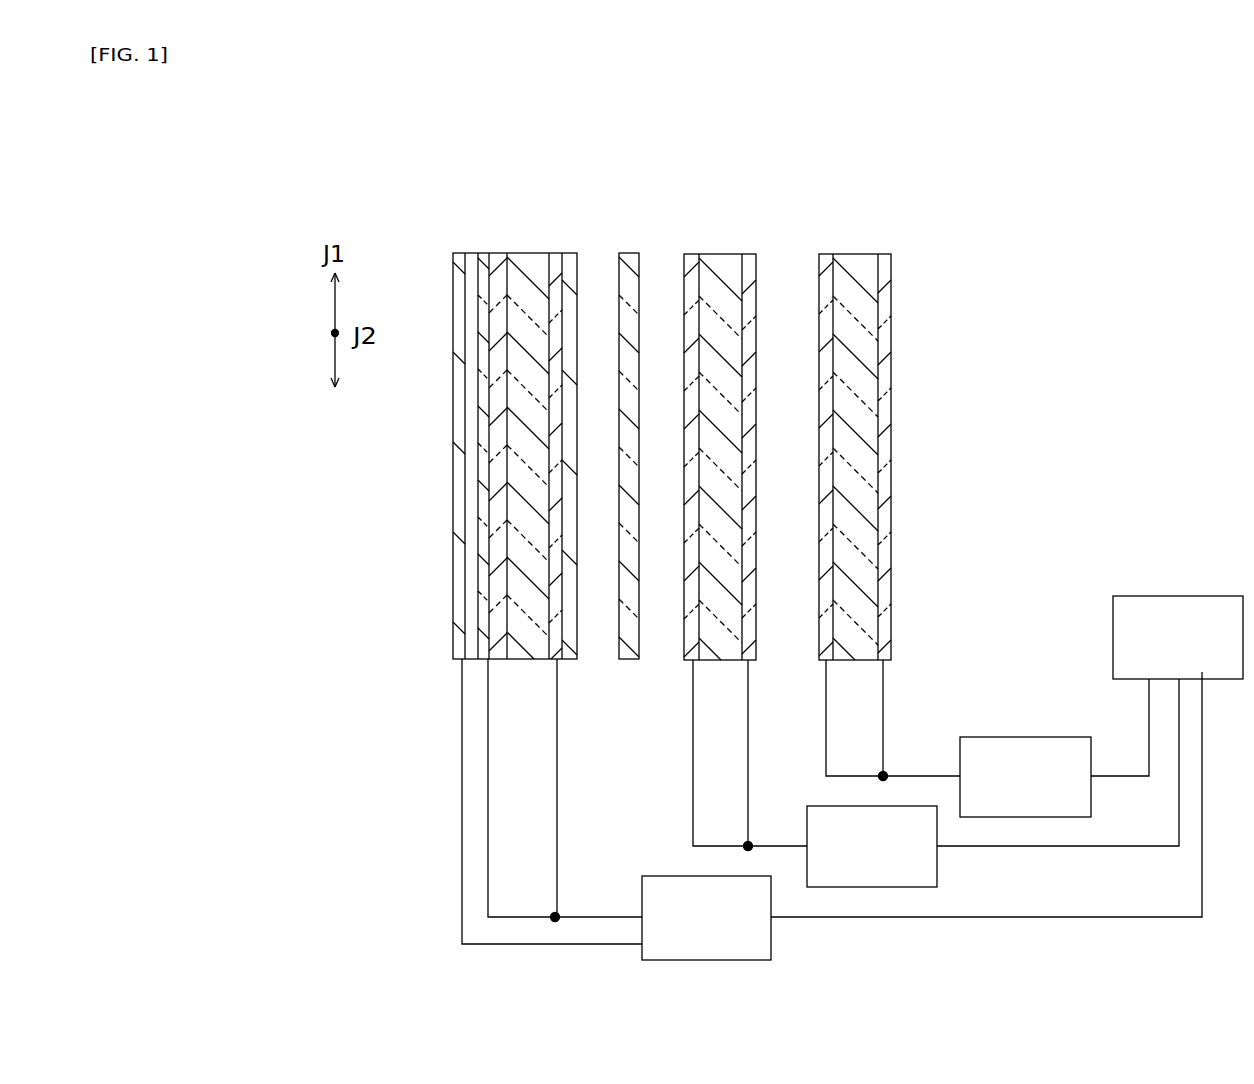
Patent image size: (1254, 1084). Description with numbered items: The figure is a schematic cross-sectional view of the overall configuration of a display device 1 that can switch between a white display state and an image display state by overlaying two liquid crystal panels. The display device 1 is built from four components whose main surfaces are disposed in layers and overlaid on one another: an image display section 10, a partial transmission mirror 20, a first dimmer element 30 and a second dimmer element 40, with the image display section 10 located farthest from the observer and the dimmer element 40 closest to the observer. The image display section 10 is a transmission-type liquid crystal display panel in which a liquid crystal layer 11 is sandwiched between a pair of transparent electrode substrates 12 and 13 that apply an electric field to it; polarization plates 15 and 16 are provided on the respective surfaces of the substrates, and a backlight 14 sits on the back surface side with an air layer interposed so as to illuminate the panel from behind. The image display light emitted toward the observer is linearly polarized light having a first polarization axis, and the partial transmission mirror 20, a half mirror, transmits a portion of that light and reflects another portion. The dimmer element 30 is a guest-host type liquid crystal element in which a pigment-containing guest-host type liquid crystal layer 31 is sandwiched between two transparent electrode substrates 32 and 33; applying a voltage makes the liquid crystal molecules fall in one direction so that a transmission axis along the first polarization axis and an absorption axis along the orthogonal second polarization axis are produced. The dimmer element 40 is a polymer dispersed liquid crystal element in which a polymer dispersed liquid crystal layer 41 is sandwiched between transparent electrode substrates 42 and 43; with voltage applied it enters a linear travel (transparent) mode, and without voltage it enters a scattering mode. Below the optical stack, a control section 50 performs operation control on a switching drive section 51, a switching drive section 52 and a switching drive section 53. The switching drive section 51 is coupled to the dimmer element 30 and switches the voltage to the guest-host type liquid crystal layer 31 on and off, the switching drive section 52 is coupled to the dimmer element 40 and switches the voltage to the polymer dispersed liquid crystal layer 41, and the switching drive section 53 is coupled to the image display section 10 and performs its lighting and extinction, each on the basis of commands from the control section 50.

The display device 1 is at (1058, 238).
The image display section 10 is at (407, 174).
The liquid crystal layer 11 is at (530, 255).
The transparent electrode substrate 12 is at (500, 255).
The transparent electrode substrate 13 is at (557, 255).
The backlight 14 is at (458, 255).
The polarization plate 15 is at (572, 255).
The polarization plate 16 is at (483, 255).
The partial transmission mirror 20 is at (632, 527).
The first dimmer element 30 is at (760, 179).
The guest-host type liquid crystal layer 31 is at (722, 254).
The transparent electrode substrate 32 is at (690, 254).
The transparent electrode substrate 33 is at (745, 254).
The second dimmer element 40 is at (897, 179).
The polymer dispersed liquid crystal layer 41 is at (859, 254).
The transparent electrode substrate 42 is at (826, 254).
The transparent electrode substrate 43 is at (884, 254).
The control section 50 is at (1200, 596).
The switching drive section 51 is at (818, 806).
The switching drive section 52 is at (1068, 737).
The switching drive section 53 is at (652, 876).